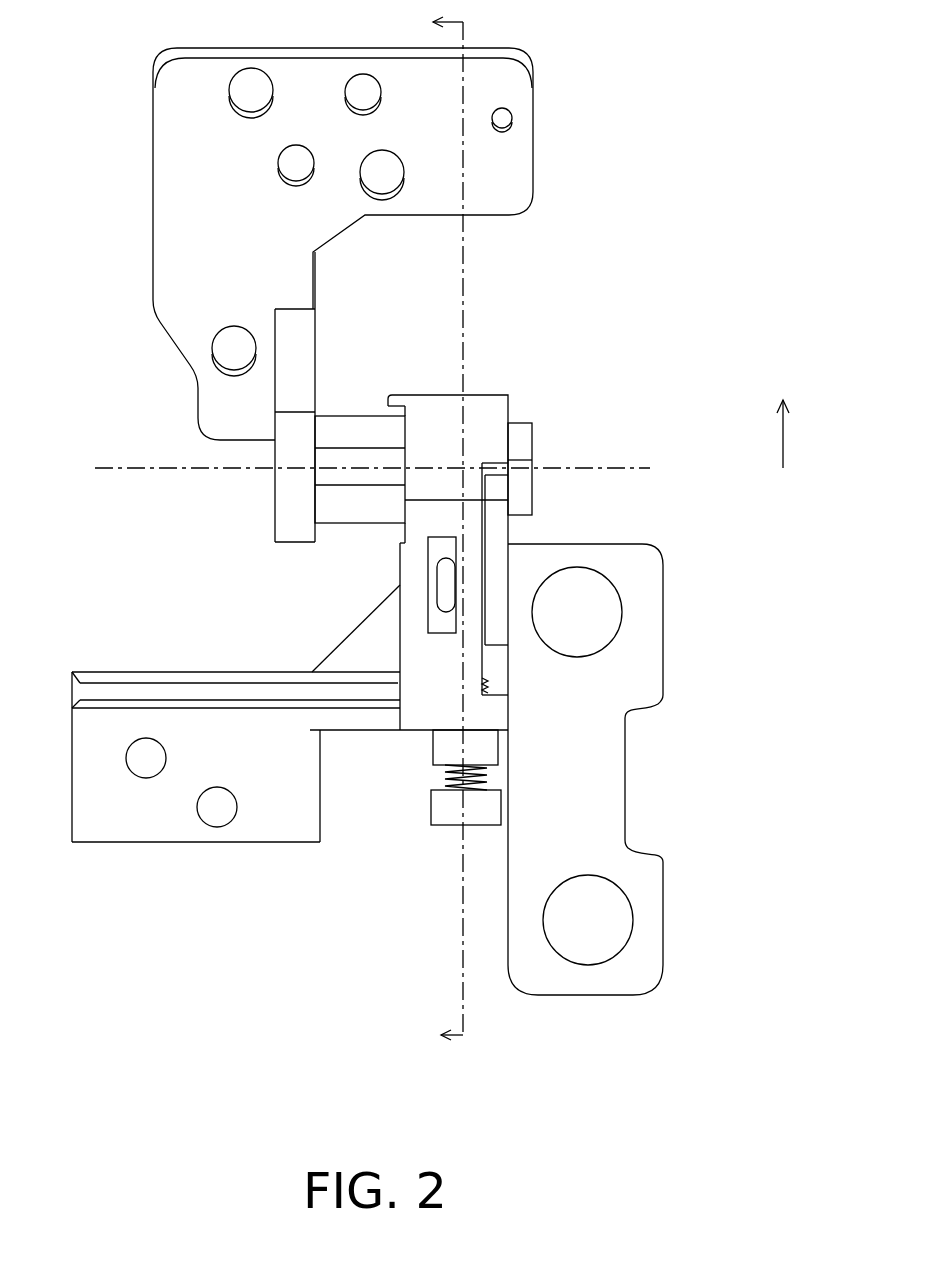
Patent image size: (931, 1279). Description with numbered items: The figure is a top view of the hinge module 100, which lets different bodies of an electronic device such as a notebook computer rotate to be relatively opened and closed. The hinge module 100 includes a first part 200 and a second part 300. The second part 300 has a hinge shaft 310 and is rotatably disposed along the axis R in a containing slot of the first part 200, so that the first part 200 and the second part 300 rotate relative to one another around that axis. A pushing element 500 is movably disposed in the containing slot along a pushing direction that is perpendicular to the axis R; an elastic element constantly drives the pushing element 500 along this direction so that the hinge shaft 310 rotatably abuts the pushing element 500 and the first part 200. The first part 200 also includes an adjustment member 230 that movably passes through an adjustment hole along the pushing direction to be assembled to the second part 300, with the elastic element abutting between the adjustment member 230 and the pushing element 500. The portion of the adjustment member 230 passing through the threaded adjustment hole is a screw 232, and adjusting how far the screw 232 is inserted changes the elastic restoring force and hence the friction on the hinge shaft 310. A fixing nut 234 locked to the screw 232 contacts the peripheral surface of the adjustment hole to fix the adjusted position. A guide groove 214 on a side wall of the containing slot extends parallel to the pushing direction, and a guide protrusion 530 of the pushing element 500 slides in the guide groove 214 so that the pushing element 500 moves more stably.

The hinge module 100 is at (443, 547).
The first part 200 is at (652, 664).
The guide groove 214 is at (443, 619).
The adjustment member 230 is at (455, 810).
The screw 232 is at (445, 790).
The fixing nut 234 is at (477, 745).
The second part 300 is at (155, 245).
The hinge shaft 310 is at (518, 483).
The pushing element 500 is at (495, 525).
The guide protrusion 530 is at (445, 570).